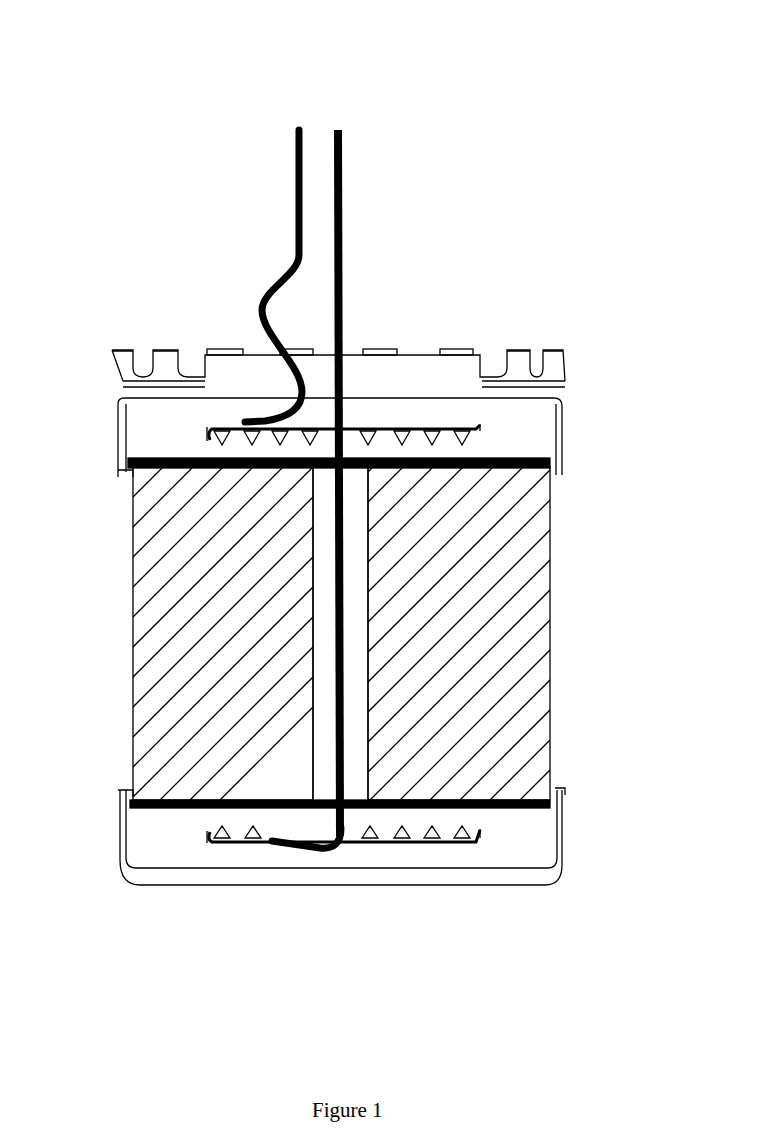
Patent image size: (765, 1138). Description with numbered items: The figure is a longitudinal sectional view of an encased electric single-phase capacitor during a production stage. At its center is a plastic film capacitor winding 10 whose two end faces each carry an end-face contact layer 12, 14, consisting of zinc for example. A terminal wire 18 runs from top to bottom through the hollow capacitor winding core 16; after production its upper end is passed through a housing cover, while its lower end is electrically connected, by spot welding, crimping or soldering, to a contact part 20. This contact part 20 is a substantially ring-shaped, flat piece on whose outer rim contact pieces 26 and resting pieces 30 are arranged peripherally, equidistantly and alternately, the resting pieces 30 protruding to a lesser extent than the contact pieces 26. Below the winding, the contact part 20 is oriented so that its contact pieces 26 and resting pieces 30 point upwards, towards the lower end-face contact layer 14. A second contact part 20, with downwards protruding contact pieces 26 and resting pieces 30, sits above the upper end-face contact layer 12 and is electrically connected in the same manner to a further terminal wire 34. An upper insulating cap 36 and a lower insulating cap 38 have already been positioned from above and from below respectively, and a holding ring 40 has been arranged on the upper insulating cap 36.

The plastic film capacitor winding 10 is at (556, 659).
The end-face contact layer 12 is at (128, 463).
The end-face contact layer 14 is at (128, 800).
The hollow capacitor winding core 16 is at (358, 581).
The terminal wire 18 is at (344, 134).
The contact part 20 is at (486, 435).
The contact pieces 26 is at (444, 437).
The resting pieces 30 is at (474, 437).
The further terminal wire 34 is at (293, 134).
The upper insulating cap 36 is at (566, 393).
The lower insulating cap 38 is at (566, 877).
The holding ring 40 is at (513, 343).